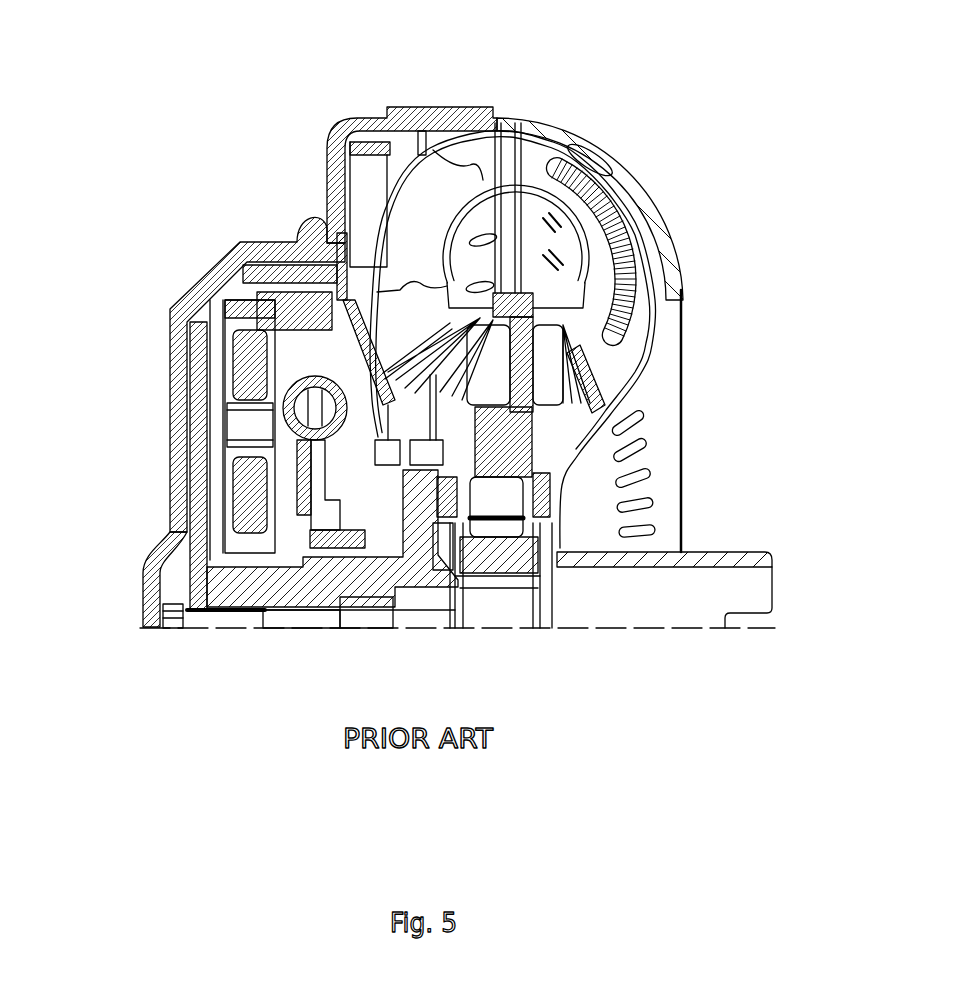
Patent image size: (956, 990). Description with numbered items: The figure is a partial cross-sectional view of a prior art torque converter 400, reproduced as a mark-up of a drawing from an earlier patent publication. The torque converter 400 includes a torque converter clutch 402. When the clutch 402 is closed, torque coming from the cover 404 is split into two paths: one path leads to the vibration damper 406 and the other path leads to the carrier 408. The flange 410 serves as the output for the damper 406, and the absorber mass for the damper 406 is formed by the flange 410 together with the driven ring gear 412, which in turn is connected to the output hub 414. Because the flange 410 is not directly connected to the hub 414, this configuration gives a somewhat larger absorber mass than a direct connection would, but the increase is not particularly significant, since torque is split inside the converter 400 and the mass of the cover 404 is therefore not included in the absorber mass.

The torque converter 400 is at (712, 272).
The torque converter clutch 402 is at (318, 170).
The cover 404 is at (173, 523).
The vibration damper 406 is at (356, 413).
The carrier 408 is at (210, 426).
The flange 410 is at (318, 500).
The driven ring gear 412 is at (180, 573).
The output hub 414 is at (334, 568).